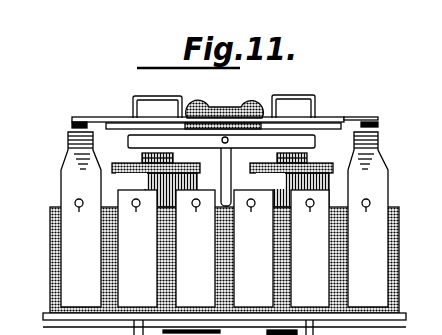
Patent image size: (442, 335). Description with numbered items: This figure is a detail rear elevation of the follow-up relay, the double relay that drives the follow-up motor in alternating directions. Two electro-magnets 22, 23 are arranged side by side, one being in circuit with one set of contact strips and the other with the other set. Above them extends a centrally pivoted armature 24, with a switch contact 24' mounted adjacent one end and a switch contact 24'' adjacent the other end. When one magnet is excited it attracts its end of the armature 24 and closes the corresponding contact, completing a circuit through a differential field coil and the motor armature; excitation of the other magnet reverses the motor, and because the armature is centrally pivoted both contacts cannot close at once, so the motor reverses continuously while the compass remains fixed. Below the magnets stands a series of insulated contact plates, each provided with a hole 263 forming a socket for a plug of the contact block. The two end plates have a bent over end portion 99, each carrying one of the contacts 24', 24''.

The electro-magnet 22 is at (291, 180).
The electro-magnet 23 is at (156, 180).
The pivoted armature 24 is at (208, 150).
The switch contact 24' is at (378, 125).
The switch contact 24'' is at (64, 126).
The bent over end portion 99 is at (67, 165).
The hole 263 is at (224, 214).